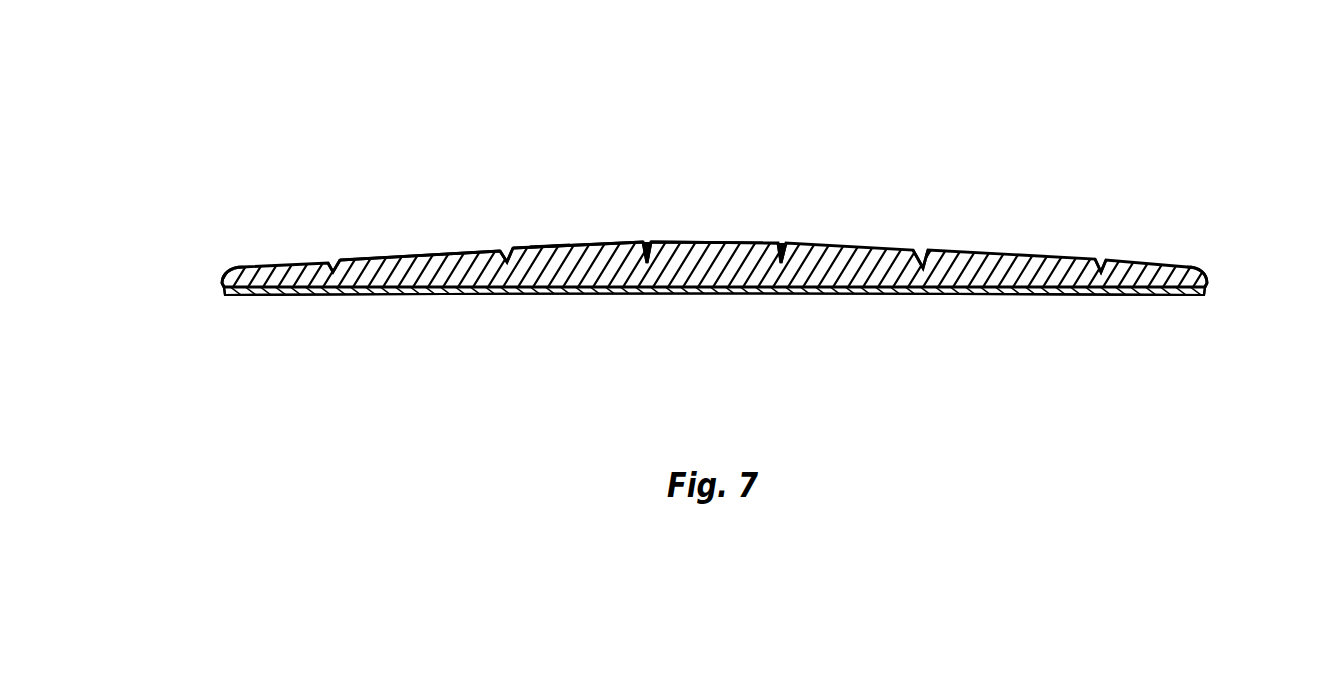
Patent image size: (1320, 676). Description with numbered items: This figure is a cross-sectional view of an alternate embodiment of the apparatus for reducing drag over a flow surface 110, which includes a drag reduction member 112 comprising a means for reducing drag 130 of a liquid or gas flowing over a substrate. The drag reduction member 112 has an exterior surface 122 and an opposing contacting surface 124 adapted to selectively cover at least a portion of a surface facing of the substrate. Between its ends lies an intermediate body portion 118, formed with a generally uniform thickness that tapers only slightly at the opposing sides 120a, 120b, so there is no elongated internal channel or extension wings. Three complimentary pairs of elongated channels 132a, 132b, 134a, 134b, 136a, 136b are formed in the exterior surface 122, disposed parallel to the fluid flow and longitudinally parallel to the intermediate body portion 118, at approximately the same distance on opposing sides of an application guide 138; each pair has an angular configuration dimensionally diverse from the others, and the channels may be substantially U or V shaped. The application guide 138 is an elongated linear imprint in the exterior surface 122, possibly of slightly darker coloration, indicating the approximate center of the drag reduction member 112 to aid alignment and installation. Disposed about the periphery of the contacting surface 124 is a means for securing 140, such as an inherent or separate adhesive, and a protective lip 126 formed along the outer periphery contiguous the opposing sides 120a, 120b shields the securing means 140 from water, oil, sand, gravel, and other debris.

The apparatus for reducing drag over a flow surface 110 is at (818, 133).
The drag reduction member 112 is at (1018, 247).
The intermediate body portion 118 is at (419, 255).
The opposing side 120a is at (221, 280).
The opposing side 120b is at (1206, 280).
The exterior surface 122 is at (608, 241).
The contacting surface 124 is at (741, 289).
The protective lip 126 is at (221, 293).
The means for reducing drag 130 is at (548, 235).
The elongated channel 132a is at (647, 255).
The elongated channel 132b is at (781, 255).
The elongated channel 134a is at (506, 258).
The elongated channel 134b is at (921, 266).
The elongated channel 136a is at (333, 266).
The elongated channel 136b is at (1101, 268).
The application guide 138 is at (710, 240).
The means for securing 140 is at (1019, 297).